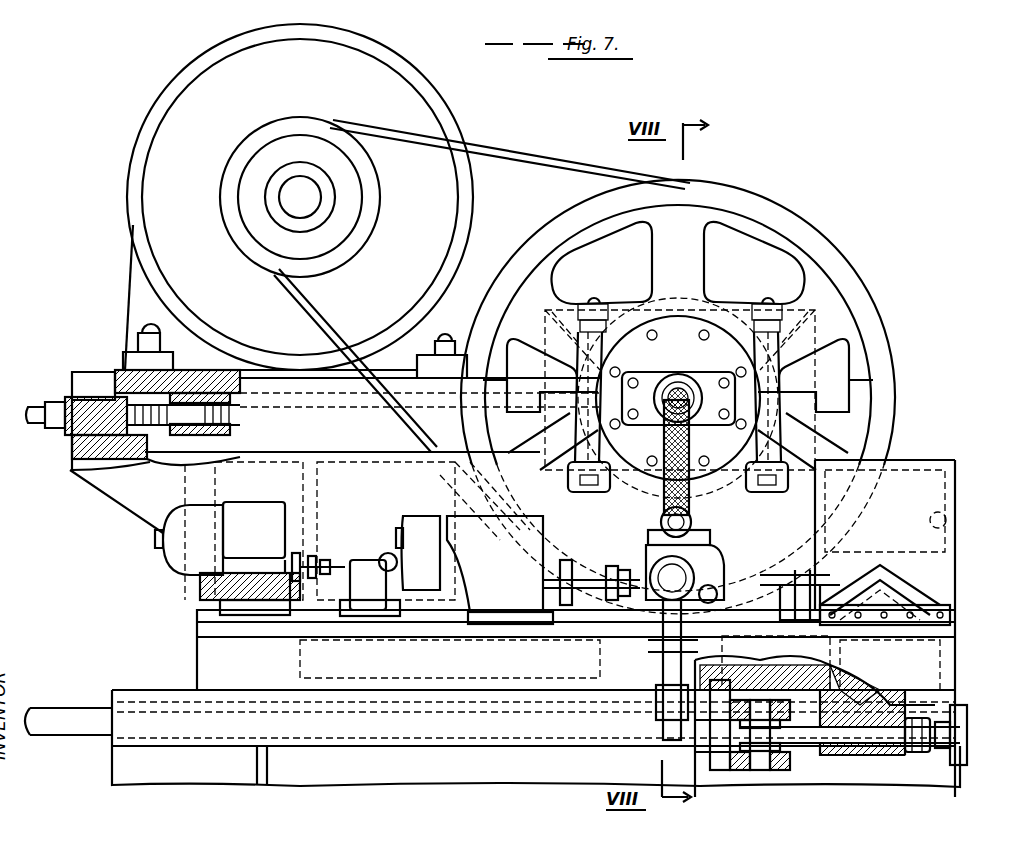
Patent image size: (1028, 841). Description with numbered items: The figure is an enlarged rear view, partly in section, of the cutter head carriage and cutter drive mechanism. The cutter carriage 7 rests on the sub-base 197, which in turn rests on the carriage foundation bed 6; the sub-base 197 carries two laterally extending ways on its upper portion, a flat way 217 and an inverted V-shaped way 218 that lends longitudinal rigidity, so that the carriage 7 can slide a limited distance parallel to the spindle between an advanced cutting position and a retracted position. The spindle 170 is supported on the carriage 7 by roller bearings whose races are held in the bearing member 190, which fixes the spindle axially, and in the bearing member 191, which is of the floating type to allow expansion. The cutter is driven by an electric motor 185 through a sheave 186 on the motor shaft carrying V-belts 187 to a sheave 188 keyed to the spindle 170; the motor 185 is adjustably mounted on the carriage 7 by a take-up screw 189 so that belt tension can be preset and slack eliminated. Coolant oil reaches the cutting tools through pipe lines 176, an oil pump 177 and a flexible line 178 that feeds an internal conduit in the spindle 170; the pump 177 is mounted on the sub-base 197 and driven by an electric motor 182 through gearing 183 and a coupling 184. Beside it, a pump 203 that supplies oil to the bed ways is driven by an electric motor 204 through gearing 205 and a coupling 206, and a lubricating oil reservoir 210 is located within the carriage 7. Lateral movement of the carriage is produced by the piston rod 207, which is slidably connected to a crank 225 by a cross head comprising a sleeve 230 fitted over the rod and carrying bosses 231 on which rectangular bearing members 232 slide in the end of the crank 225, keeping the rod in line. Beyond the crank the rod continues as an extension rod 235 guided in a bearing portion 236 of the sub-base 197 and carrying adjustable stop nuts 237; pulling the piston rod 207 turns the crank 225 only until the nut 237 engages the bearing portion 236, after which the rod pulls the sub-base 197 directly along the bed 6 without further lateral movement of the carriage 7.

The carriage bed 6 is at (435, 775).
The cutter carriage 7 is at (368, 500).
The spindle 170 is at (678, 368).
The pipe lines 176 is at (660, 664).
The oil pump 177 is at (646, 596).
The flexible line 178 is at (664, 450).
The electric motor 182 is at (474, 570).
The gearing 183 is at (550, 575).
The coupling 184 is at (578, 586).
The electric motor 185 is at (310, 67).
The sheave 186 is at (306, 161).
The V-belts 187 is at (533, 152).
The sheave 188 is at (690, 236).
The take-up screw 189 is at (156, 430).
The bearing member 190 is at (738, 300).
The bearing member 191 is at (654, 316).
The sub-base 197 is at (398, 671).
The pump 203 is at (364, 560).
The electric motor 204 is at (204, 520).
The gearing 205 is at (300, 550).
The coupling 206 is at (312, 562).
The piston rod 207 is at (72, 714).
The lubricating oil reservoir 210 is at (948, 522).
The way 217 is at (205, 585).
The way 218 is at (894, 584).
The crank 225 is at (738, 770).
The sleeve 230 is at (750, 772).
The bosses 231 is at (773, 697).
The bearing members 232 is at (750, 700).
The extension rod 235 is at (872, 746).
The bearing portion 236 is at (913, 752).
The stop nut 237 is at (948, 758).